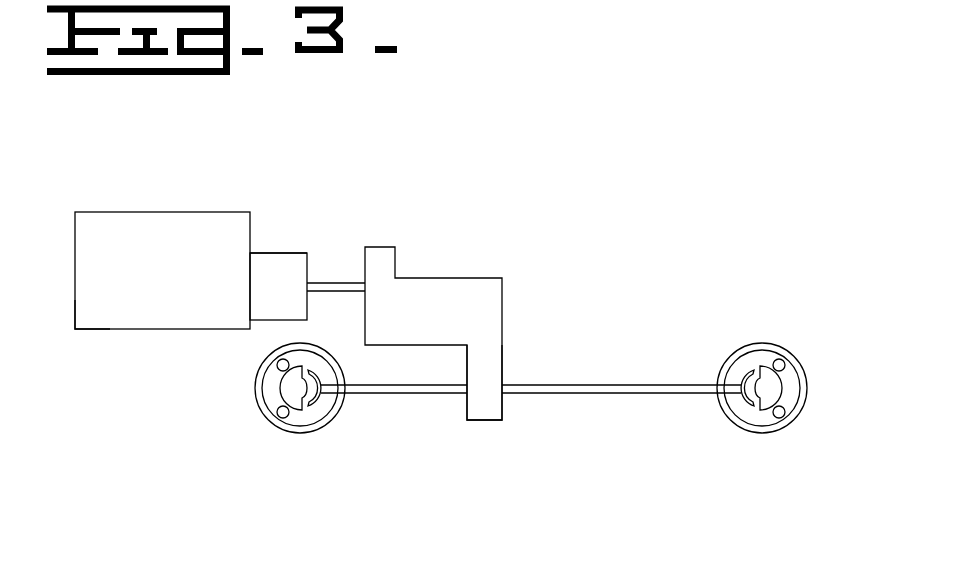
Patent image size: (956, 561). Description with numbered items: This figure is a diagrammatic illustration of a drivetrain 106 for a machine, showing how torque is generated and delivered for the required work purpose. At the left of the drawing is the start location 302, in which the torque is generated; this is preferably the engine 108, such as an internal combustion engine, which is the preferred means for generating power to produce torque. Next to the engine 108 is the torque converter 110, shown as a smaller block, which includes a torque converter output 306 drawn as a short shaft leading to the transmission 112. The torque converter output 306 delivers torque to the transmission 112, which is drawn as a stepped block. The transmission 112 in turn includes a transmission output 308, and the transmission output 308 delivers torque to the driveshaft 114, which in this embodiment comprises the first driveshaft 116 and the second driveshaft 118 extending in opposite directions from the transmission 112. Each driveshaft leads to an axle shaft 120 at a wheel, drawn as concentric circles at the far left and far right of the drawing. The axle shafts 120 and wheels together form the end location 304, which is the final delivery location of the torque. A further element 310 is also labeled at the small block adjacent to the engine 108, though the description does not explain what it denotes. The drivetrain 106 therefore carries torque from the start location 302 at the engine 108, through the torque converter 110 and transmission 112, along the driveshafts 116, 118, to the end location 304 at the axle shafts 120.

The drivetrain 106 is at (210, 157).
The engine 108 is at (112, 212).
The torque converter 110 is at (268, 253).
The transmission 112 is at (437, 278).
The driveshaft 114 is at (518, 442).
The first driveshaft 116 is at (662, 394).
The second driveshaft 118 is at (422, 393).
The axle shaft 120 is at (288, 392).
The start location 302 is at (73, 313).
The end location 304 is at (257, 387).
The torque converter output 306 is at (310, 282).
The transmission output 308 is at (483, 387).
The gear reducer 310 is at (250, 270).